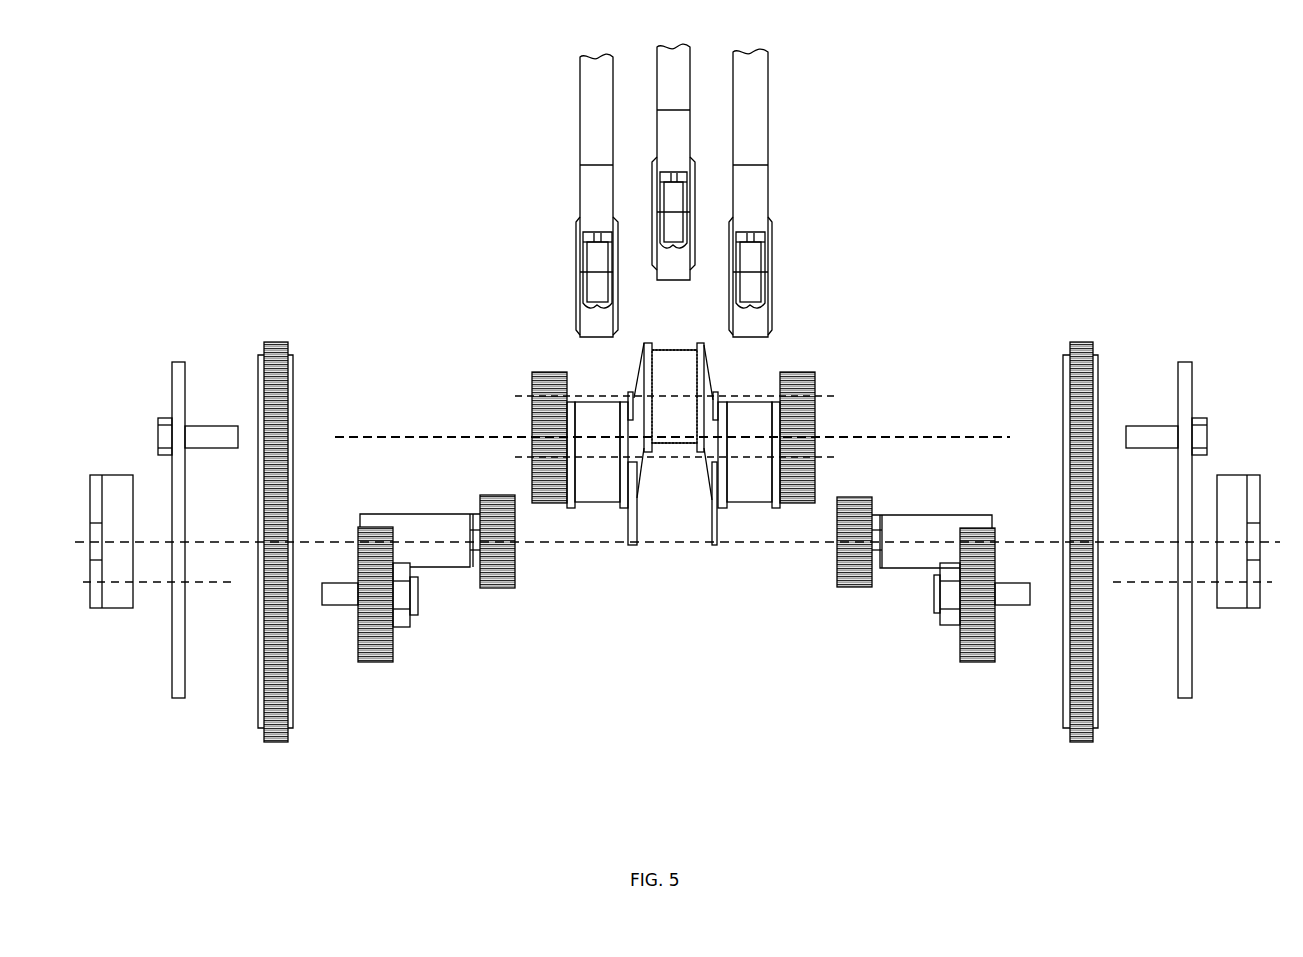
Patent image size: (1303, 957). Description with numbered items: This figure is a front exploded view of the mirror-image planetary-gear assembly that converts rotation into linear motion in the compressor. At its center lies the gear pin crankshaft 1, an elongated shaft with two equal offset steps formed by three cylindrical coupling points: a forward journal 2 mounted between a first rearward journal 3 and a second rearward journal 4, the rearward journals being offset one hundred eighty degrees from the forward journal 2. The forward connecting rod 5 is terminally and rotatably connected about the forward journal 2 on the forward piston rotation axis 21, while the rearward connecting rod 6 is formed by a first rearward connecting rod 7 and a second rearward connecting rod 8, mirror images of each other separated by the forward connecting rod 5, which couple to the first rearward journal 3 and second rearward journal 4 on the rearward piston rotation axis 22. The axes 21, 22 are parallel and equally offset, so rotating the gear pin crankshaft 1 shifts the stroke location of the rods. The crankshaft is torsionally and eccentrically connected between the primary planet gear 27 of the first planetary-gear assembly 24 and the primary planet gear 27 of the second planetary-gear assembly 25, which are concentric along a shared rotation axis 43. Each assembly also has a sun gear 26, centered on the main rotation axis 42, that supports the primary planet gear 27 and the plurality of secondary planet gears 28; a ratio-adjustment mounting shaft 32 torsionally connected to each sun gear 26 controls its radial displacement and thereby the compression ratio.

The gear pin crankshaft 1 is at (672, 610).
The forward journal 2 is at (680, 431).
The first rearward journal 3 is at (601, 491).
The second rearward journal 4 is at (756, 491).
The forward connecting rod 5 is at (680, 147).
The rearward connecting rod 6 is at (674, 193).
The first rearward connecting rod 7 is at (613, 214).
The second rearward connecting rod 8 is at (767, 214).
The forward piston rotation axis 21 is at (515, 395).
The rearward piston rotation axis 22 is at (838, 458).
The first planetary-gear assembly 24 is at (130, 316).
The second planetary-gear assembly 25 is at (1215, 316).
The sun gear 26 is at (501, 578).
The primary planet gear 27 is at (552, 377).
The plurality of secondary planet gears 28 is at (382, 653).
The ratio-adjustment mounting shaft 32 is at (455, 562).
The main rotation axis 42 is at (682, 543).
The shared rotation axis 43 is at (920, 439).